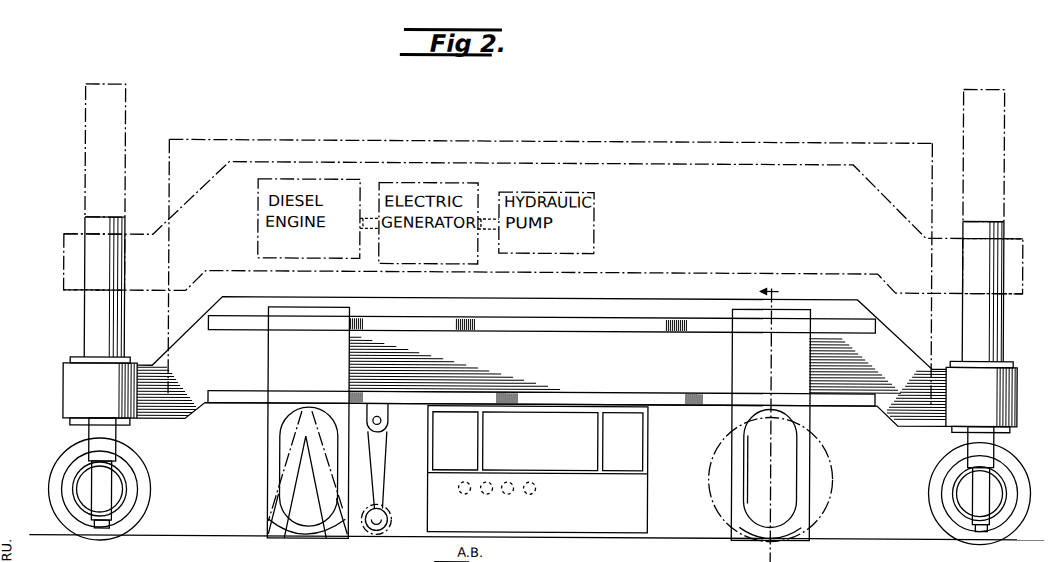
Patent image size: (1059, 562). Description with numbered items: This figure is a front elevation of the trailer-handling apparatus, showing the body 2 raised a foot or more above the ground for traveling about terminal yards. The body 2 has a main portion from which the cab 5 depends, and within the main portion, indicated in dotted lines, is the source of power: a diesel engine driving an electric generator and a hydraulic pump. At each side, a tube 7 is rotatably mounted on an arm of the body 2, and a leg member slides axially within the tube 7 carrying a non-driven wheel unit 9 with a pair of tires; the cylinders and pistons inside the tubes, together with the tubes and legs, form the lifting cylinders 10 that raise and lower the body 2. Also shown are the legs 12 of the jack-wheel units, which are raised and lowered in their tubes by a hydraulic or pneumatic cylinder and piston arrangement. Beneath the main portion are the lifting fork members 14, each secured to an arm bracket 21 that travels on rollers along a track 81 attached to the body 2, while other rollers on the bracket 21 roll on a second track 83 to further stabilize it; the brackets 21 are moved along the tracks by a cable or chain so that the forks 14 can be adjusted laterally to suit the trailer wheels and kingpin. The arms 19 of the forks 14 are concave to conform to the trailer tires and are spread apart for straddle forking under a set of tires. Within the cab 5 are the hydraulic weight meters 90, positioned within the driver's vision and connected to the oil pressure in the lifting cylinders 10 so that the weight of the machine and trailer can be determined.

The body 2 is at (190, 420).
The lifting cylinders 10 is at (84, 162).
The tube 7 is at (84, 317).
The legs 12 is at (92, 437).
The wheel unit structure 9 is at (145, 493).
The arm bracket 21 is at (266, 404).
The track 81 is at (514, 328).
The track 83 is at (602, 399).
The lifting fork members 14 is at (266, 523).
The arms 19 is at (800, 536).
The cab 5 is at (642, 480).
The hydraulic weight meters 90 is at (493, 494).